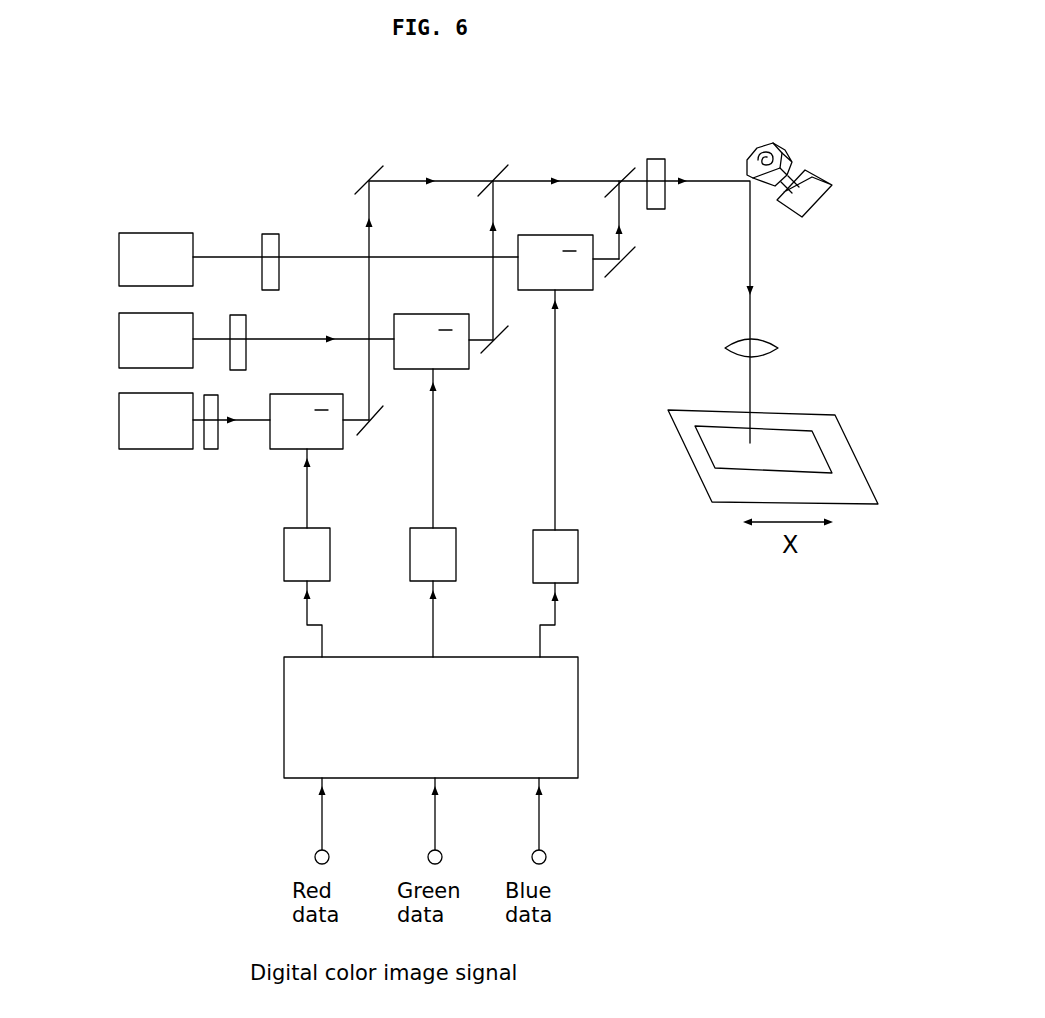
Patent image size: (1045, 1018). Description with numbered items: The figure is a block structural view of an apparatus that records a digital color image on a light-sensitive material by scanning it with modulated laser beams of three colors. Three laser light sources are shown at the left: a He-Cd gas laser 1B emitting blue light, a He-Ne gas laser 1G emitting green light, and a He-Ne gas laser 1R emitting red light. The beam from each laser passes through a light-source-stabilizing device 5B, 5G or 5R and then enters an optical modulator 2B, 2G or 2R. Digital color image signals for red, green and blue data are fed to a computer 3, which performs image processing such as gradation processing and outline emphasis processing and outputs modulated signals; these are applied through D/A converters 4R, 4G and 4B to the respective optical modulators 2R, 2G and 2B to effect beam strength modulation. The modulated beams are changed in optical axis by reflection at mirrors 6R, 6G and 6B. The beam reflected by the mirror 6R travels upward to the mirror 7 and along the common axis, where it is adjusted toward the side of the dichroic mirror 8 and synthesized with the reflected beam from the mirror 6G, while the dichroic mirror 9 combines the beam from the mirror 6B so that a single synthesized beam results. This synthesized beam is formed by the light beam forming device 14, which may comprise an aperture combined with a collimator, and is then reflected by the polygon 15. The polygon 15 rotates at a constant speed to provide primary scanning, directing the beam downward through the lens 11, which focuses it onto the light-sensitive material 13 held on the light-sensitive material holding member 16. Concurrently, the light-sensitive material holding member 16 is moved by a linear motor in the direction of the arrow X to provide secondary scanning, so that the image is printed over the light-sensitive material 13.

The He-Cd gas laser 1B is at (167, 232).
The He-Ne gas laser 1G is at (119, 355).
The He-Ne gas laser 1R is at (119, 437).
The light-source-stabilizing device 5B is at (270, 233).
The light-source-stabilizing device 5G is at (235, 313).
The light-source-stabilizing device 5R is at (212, 452).
The optical modulator 2R is at (310, 393).
The optical modulator 2G is at (442, 310).
The optical modulator 2B is at (565, 233).
The mirror 6R is at (377, 418).
The mirror 6G is at (498, 350).
The mirror 6B is at (627, 263).
The beam combining mirror 7 is at (362, 182).
The dichroic mirror 8 is at (498, 170).
The dichroic mirror 9 is at (625, 172).
The light beam forming device 14 is at (655, 157).
The polygon 15 is at (795, 143).
The lens 11 is at (767, 340).
The light-sensitive material 13 is at (805, 450).
The light-sensitive material holding member 16 is at (853, 487).
The D/A converter 4R is at (284, 560).
The D/A converter 4G is at (410, 560).
The D/A converter 4B is at (533, 560).
The computer 3 is at (284, 733).